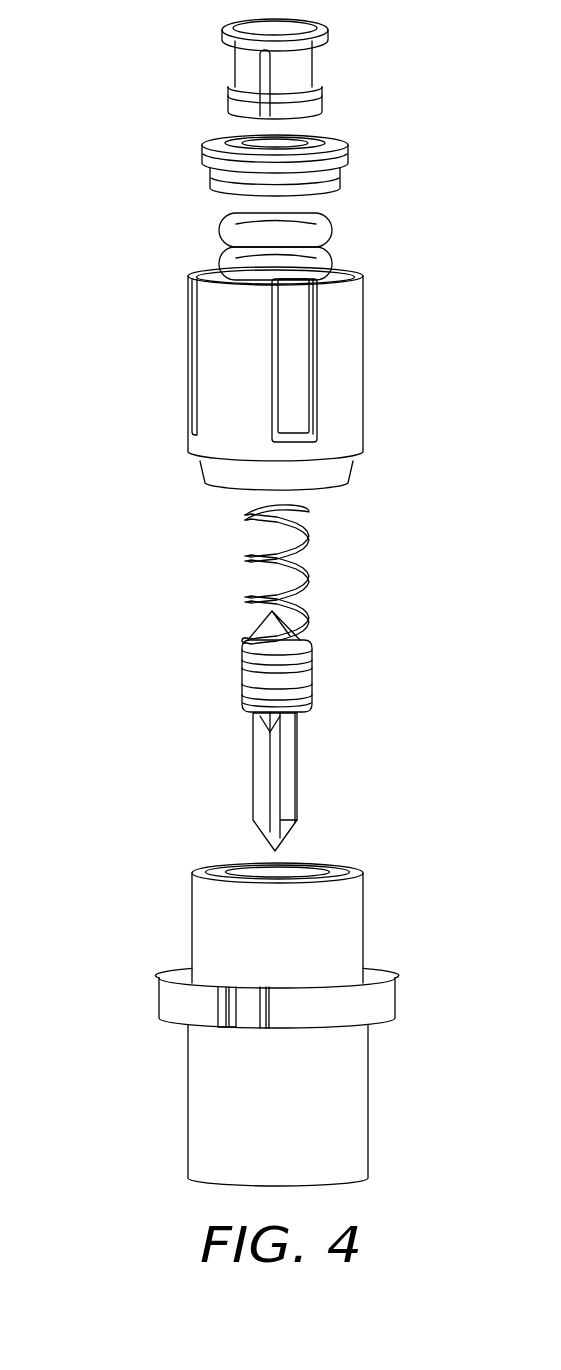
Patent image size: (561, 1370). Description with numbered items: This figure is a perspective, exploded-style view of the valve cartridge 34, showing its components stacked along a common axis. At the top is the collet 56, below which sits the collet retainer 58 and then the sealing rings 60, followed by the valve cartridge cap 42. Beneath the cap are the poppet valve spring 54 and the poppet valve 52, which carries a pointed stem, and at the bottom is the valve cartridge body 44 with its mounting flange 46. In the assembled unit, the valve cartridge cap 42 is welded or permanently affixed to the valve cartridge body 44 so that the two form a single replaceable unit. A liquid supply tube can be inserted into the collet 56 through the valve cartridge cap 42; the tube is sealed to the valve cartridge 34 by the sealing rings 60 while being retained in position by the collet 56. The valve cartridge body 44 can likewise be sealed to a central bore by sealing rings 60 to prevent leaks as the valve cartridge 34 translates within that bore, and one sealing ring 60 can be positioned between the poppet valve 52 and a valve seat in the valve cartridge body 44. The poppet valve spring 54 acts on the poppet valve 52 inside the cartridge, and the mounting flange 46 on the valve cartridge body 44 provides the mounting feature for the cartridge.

The valve cartridge 34 is at (146, 570).
The valve cartridge cap 42 is at (345, 372).
The valve cartridge body 44 is at (350, 1102).
The mounting flange 46 is at (385, 1003).
The poppet valve 52 is at (305, 680).
The poppet valve spring 54 is at (305, 572).
The collet 56 is at (300, 71).
The collet retainer 58 is at (347, 147).
The sealing rings 60 is at (325, 227).